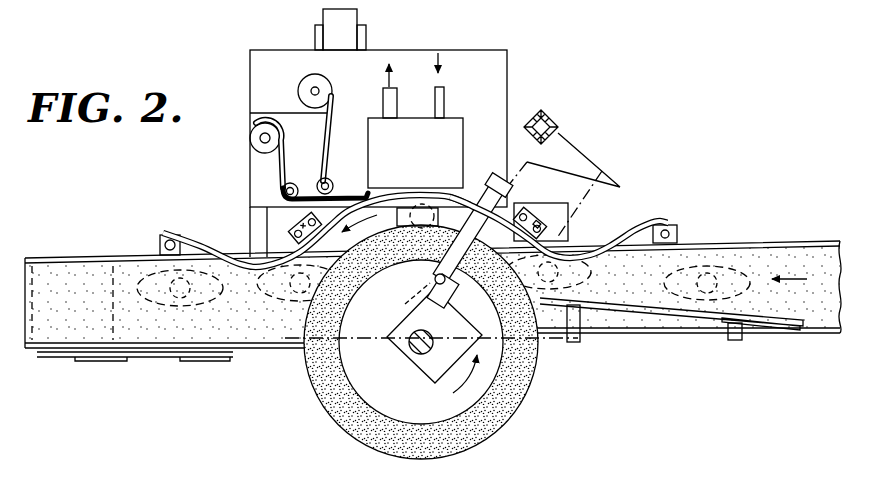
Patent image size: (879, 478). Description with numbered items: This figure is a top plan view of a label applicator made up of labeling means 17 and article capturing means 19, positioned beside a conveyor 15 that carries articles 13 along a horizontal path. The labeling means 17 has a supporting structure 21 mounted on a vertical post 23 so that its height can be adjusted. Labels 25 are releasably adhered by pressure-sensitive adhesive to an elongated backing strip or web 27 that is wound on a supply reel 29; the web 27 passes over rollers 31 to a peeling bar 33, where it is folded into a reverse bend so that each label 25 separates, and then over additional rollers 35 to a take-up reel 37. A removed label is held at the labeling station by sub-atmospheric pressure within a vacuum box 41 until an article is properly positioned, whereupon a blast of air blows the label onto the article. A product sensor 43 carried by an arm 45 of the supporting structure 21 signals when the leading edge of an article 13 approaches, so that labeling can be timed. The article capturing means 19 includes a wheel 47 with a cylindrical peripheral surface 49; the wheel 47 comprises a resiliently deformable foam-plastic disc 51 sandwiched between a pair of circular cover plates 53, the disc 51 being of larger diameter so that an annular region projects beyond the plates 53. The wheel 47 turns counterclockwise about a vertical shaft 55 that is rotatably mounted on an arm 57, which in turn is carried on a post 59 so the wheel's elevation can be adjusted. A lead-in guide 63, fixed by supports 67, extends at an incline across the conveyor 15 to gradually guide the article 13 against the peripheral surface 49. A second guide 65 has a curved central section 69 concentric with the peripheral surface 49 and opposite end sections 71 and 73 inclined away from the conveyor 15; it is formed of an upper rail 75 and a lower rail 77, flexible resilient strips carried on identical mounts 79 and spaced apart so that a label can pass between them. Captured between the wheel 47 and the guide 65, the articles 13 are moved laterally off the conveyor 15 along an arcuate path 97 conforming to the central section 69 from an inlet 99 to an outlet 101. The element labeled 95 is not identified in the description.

The articles 13 is at (135, 288).
The conveyor 15 is at (790, 243).
The labeling means 17 is at (444, 133).
The article capturing means 19 is at (408, 347).
The supporting structure 21 is at (492, 60).
The vertical post 23 is at (325, 18).
The labels 25 is at (334, 143).
The backing strip or web 27 is at (250, 113).
The supply reel 29 is at (305, 80).
The rollers 31 is at (333, 178).
The peeling bar 33 is at (347, 190).
The additional rollers 35 is at (282, 190).
The take-up reel 37 is at (256, 145).
The vacuum box 41 is at (457, 114).
The product sensor 43 is at (417, 308).
The arm 45 is at (490, 178).
The wheel 47 is at (508, 417).
The cylindrical peripheral surface 49 is at (482, 440).
The resiliently deformable cylindrical disc 51 is at (518, 382).
The circular cover plates 53 is at (355, 378).
The shaft 55 is at (418, 358).
The arm 57 is at (630, 148).
The post 59 is at (553, 116).
The lead-in guide 63 is at (667, 312).
The guide 65 is at (636, 226).
The supports 67 is at (575, 343).
The central section 69 is at (452, 180).
The end section 71 is at (662, 219).
The end section 73 is at (168, 230).
The upper rail 75 is at (238, 292).
The lower rail 77 is at (203, 243).
The mounts 79 is at (292, 233).
The phantom roller position 95 is at (414, 256).
The arcuate path 97 is at (374, 236).
The inlet 99 is at (592, 272).
The outlet 101 is at (290, 302).